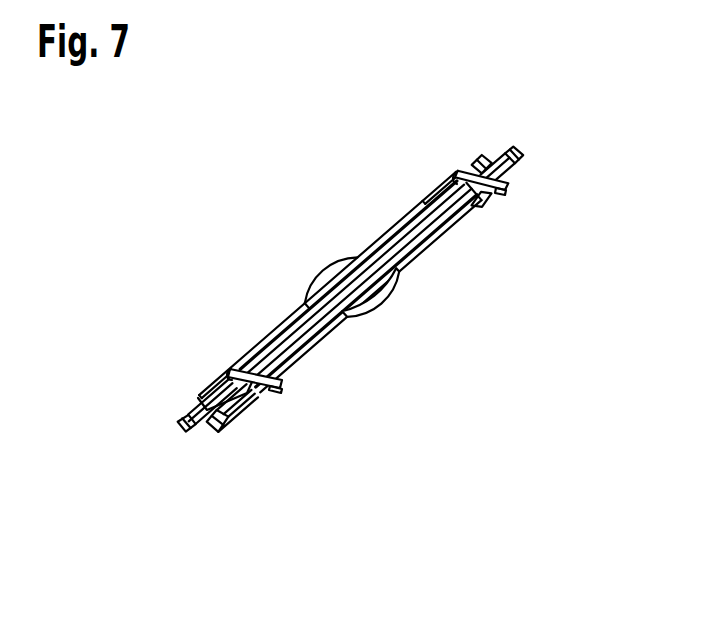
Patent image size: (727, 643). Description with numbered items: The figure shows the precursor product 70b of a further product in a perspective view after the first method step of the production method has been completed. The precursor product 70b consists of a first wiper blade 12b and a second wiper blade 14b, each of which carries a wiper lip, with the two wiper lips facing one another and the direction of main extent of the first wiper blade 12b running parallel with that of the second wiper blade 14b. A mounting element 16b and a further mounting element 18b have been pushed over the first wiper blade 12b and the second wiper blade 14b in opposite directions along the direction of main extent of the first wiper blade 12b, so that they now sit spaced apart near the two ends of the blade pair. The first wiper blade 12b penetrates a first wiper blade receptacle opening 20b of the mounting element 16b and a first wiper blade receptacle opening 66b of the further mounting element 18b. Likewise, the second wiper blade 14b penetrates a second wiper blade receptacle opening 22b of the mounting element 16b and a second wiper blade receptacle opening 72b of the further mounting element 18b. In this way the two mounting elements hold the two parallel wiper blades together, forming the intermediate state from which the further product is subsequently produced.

The precursor product 70b is at (303, 155).
The first wiper blade 12b is at (313, 270).
The second wiper blade 14b is at (383, 325).
The first wiper blade receptacle opening 20b is at (230, 371).
The mounting element 16b is at (270, 392).
The second wiper blade receptacle opening 22b is at (265, 392).
The first wiper blade receptacle opening 66b is at (457, 180).
The further mounting element 18b is at (497, 191).
The second wiper blade receptacle opening 72b is at (491, 205).